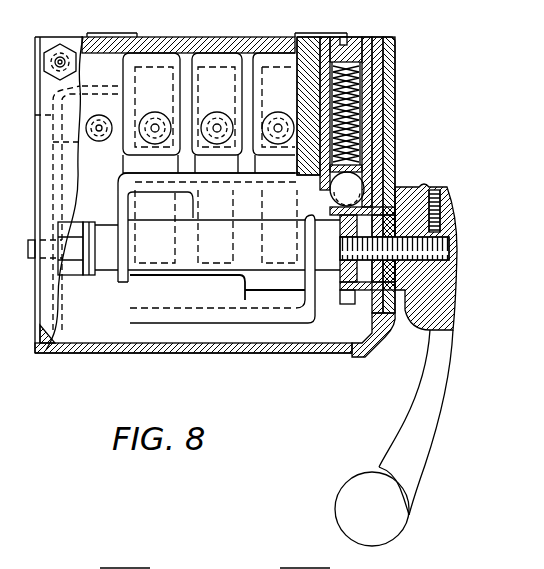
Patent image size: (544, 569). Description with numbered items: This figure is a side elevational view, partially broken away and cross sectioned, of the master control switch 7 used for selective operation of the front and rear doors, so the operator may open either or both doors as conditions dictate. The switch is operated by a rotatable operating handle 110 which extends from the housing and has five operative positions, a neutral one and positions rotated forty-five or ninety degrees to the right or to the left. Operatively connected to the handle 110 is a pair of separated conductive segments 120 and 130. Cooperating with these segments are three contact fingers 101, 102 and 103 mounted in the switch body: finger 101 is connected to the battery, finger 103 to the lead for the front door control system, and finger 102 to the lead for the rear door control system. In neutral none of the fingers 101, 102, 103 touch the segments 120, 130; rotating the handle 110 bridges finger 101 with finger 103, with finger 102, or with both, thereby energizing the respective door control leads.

The master control switch 7 is at (393, 46).
The operating handle 110 is at (422, 448).
The conductive segment 120 is at (135, 288).
The conductive segment 130 is at (122, 199).
The contact finger 101 is at (227, 170).
The contact finger 102 is at (168, 170).
The contact finger 103 is at (290, 170).